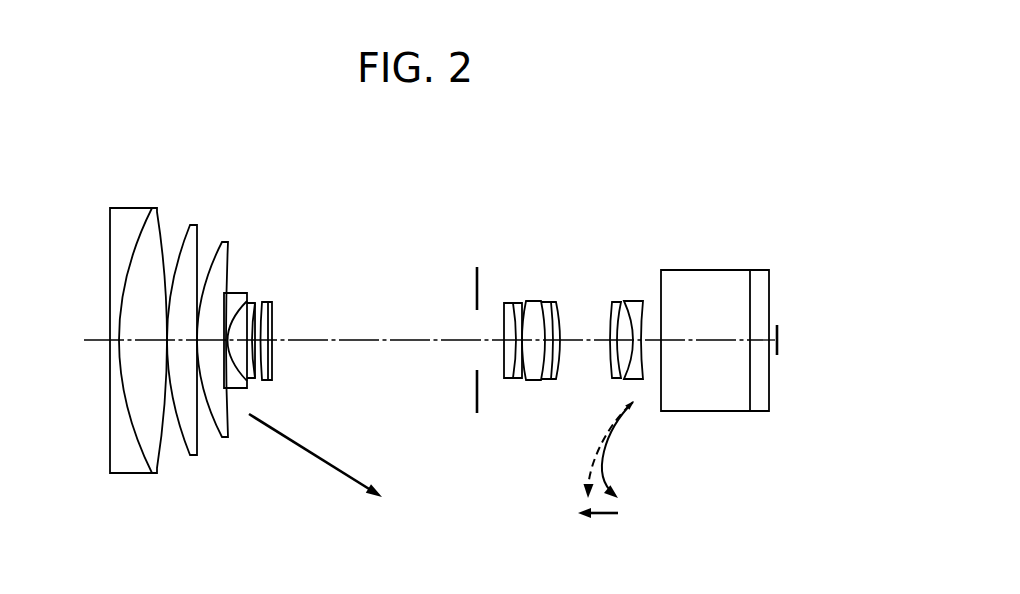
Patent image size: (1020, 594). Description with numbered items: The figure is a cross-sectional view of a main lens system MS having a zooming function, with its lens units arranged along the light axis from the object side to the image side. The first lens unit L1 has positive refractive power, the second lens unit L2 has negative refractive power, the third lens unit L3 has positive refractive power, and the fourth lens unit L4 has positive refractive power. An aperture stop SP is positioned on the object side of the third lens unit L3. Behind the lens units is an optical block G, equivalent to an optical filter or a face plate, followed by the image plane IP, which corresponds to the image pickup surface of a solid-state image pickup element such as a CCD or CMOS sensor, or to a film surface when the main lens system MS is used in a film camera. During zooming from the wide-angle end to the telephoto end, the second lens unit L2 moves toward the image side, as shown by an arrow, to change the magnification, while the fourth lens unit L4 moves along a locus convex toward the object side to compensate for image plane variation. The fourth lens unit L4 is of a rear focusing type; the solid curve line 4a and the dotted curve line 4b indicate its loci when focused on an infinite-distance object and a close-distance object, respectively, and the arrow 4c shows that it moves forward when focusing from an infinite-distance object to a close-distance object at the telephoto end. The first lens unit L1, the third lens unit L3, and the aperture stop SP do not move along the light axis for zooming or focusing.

The main lens system MS is at (660, 163).
The first lens unit L1 is at (224, 205).
The second lens unit L2 is at (283, 205).
The third lens unit L3 is at (556, 205).
The fourth lens unit L4 is at (647, 205).
The aperture stop SP is at (475, 278).
The optical block G is at (715, 280).
The image plane IP is at (779, 330).
The solid curve line 4a is at (621, 449).
The dotted curve line 4b is at (598, 451).
The arrow 4c is at (598, 528).